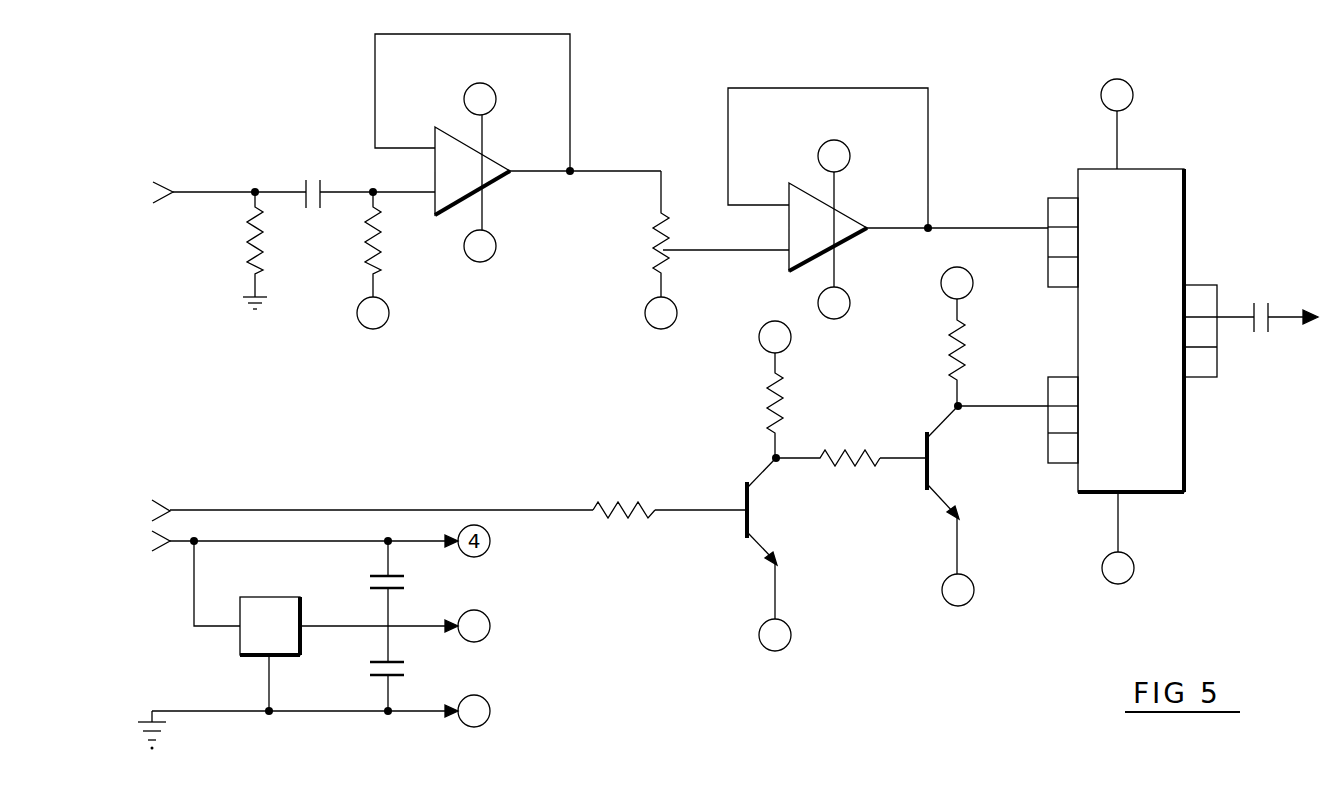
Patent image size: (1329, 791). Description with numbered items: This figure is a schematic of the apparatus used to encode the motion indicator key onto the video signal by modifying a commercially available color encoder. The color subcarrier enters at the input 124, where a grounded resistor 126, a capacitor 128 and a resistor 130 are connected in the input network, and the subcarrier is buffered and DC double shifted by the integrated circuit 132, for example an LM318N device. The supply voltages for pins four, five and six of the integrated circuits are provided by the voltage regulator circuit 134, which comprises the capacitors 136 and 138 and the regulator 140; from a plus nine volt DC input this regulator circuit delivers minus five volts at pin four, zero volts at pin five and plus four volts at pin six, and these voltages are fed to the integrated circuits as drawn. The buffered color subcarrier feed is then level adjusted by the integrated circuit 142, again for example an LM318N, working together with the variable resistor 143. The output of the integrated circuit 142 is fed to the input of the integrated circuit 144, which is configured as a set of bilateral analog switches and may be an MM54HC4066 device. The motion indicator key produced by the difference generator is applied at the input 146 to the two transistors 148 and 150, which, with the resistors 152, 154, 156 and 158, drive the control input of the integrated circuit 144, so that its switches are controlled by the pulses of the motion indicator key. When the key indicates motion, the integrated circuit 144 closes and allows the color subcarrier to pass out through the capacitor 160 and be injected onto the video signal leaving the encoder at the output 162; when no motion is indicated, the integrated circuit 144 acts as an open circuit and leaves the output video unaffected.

The color subcarrier input 124 is at (207, 192).
The grounded resistor 126 is at (250, 260).
The capacitor 128 is at (308, 183).
The resistor 130 is at (372, 260).
The integrated circuit 132 is at (489, 183).
The voltage regulator circuit 134 is at (334, 711).
The capacitor 136 is at (406, 588).
The capacitor 138 is at (408, 674).
The regulator 140 is at (270, 597).
The integrated circuit 142 is at (845, 243).
The variable resistor 143 is at (654, 256).
The integrated circuit 144 is at (1159, 169).
The motion indicator key input 146 is at (382, 510).
The transistor 148 is at (745, 536).
The transistor 150 is at (922, 484).
The resistor 152 is at (634, 503).
The resistor 154 is at (769, 409).
The resistor 156 is at (865, 451).
The resistor 158 is at (968, 354).
The capacitor 160 is at (1254, 335).
The encoder output 162 is at (1281, 317).